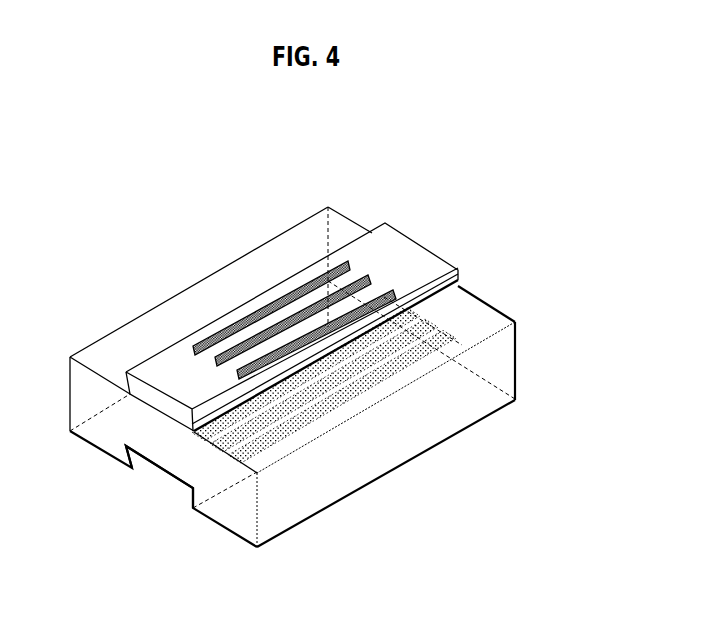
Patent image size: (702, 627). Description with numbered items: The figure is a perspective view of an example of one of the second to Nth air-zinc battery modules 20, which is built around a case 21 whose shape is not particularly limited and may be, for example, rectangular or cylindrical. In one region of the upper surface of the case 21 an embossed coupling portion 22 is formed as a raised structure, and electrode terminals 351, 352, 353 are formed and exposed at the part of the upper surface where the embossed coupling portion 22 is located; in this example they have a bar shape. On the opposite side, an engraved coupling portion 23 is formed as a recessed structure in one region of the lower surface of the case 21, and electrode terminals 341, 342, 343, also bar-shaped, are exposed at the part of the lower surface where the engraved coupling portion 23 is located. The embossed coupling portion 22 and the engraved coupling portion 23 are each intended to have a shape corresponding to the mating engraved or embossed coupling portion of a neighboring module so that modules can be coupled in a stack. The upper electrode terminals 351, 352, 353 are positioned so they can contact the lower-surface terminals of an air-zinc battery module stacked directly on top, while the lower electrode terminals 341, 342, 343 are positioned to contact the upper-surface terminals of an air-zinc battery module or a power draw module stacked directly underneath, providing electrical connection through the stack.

The air-zinc battery module 20 is at (520, 127).
The case 21 is at (447, 415).
The embossed coupling portion 22 is at (415, 263).
The engraved coupling portion 23 is at (170, 481).
The electrode terminal 341 is at (230, 410).
The electrode terminal 342 is at (270, 408).
The electrode terminal 343 is at (327, 397).
The electrode terminal 351 is at (262, 300).
The electrode terminal 352 is at (296, 312).
The electrode terminal 353 is at (328, 327).